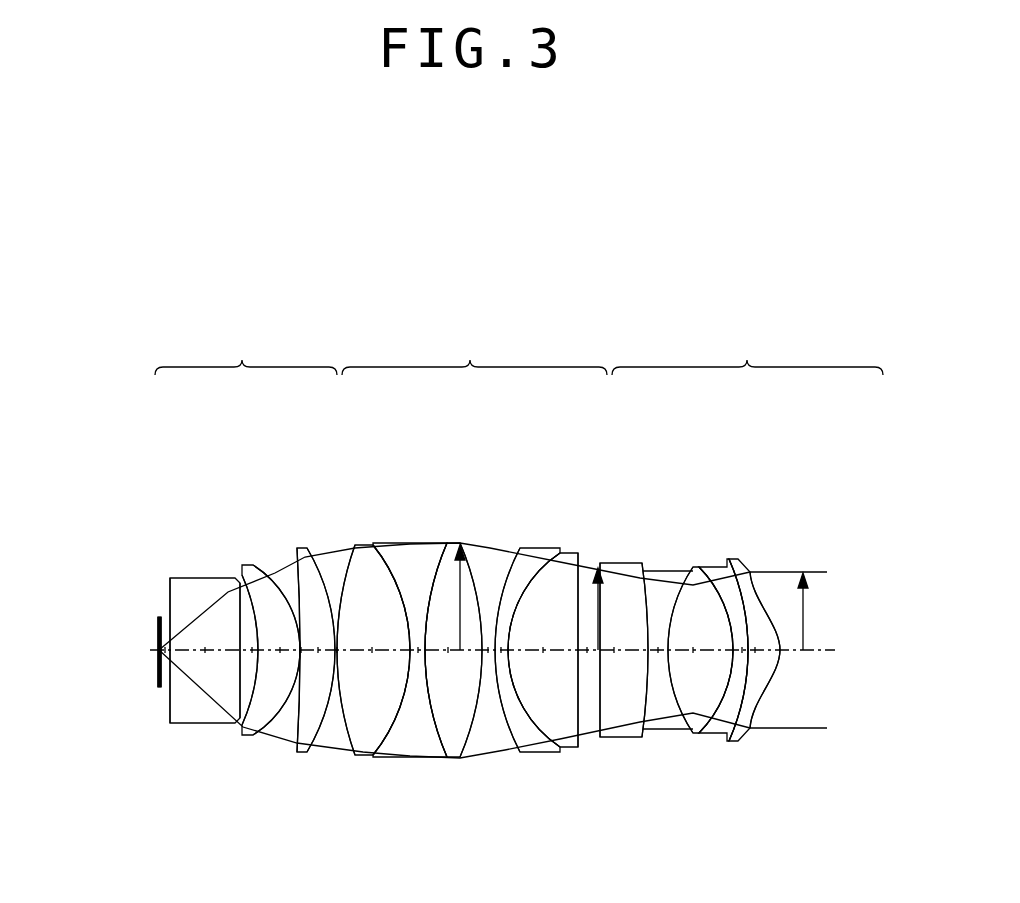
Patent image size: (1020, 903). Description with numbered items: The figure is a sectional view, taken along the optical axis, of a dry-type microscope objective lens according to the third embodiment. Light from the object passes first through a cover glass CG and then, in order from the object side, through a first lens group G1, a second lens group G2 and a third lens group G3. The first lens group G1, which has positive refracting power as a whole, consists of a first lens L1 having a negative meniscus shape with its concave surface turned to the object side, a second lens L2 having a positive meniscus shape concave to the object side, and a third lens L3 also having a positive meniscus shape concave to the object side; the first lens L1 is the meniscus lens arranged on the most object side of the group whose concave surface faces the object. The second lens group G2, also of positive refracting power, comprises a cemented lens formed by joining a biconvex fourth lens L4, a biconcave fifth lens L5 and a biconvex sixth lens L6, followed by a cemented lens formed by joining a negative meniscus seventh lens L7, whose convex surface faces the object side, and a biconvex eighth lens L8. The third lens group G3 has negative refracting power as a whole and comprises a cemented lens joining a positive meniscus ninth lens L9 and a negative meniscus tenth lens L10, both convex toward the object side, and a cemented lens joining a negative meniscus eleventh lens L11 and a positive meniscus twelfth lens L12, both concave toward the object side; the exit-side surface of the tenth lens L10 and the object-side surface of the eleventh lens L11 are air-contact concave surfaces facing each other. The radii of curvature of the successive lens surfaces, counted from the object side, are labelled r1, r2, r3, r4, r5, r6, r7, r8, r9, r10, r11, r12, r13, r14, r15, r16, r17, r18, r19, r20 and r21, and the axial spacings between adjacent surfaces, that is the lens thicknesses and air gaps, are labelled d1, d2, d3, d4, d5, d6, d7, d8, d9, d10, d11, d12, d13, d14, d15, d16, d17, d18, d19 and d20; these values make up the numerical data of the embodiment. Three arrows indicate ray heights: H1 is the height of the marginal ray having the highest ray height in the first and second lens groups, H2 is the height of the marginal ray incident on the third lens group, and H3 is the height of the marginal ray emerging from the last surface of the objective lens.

The cover glass CG is at (157, 630).
The first lens L1 is at (195, 590).
The second lens L2 is at (250, 565).
The third lens L3 is at (303, 548).
The fourth lens L4 is at (370, 545).
The fifth lens L5 is at (413, 543).
The sixth lens L6 is at (453, 543).
The seventh lens L7 is at (537, 548).
The eighth lens L8 is at (577, 553).
The ninth lens L9 is at (622, 563).
The tenth lens L10 is at (670, 570).
The eleventh lens L11 is at (723, 567).
The twelfth lens L12 is at (740, 560).
The first lens group G1 is at (246, 352).
The second lens group G2 is at (474, 352).
The third lens group G3 is at (747, 352).
The marginal ray height in first and second lens groups H1 is at (470, 582).
The marginal ray height incident on third lens group H2 is at (616, 609).
The marginal ray height at last surface H3 is at (822, 611).
The radius of curvature of lens surface r1 is at (158, 615).
The radius of curvature of lens surface r2 is at (160, 615).
The radius of curvature of lens surface r3 is at (171, 650).
The radius of curvature of lens surface r4 is at (240, 630).
The radius of curvature of lens surface r5 is at (258, 650).
The radius of curvature of lens surface r6 is at (300, 650).
The radius of curvature of lens surface r7 is at (300, 650).
The radius of curvature of lens surface r8 is at (335, 650).
The radius of curvature of lens surface r9 is at (338, 650).
The radius of curvature of lens surface r10 is at (410, 650).
The radius of curvature of lens surface r11 is at (425, 650).
The radius of curvature of lens surface r12 is at (482, 650).
The radius of curvature of lens surface r13 is at (495, 650).
The radius of curvature of lens surface r14 is at (508, 650).
The radius of curvature of lens surface r15 is at (589, 575).
The radius of curvature of lens surface r16 is at (594, 568).
The radius of curvature of lens surface r17 is at (657, 570).
The radius of curvature of lens surface r18 is at (698, 567).
The radius of curvature of lens surface r19 is at (716, 567).
The radius of curvature of lens surface r20 is at (733, 560).
The radius of curvature of lens surface r21 is at (762, 573).
The spacing between lens surfaces d1 is at (160, 652).
The spacing between lens surfaces d2 is at (163, 652).
The spacing between lens surfaces d3 is at (203, 652).
The spacing between lens surfaces d4 is at (253, 652).
The spacing between lens surfaces d5 is at (281, 652).
The spacing between lens surfaces d6 is at (302, 652).
The spacing between lens surfaces d7 is at (319, 652).
The spacing between lens surfaces d8 is at (337, 652).
The spacing between lens surfaces d9 is at (370, 652).
The spacing between lens surfaces d10 is at (418, 652).
The spacing between lens surfaces d11 is at (448, 652).
The spacing between lens surfaces d12 is at (488, 652).
The spacing between lens surfaces d13 is at (501, 652).
The spacing between lens surfaces d14 is at (543, 652).
The spacing between lens surfaces d15 is at (586, 652).
The spacing between lens surfaces d16 is at (613, 653).
The spacing between lens surfaces d17 is at (658, 652).
The spacing between lens surfaces d18 is at (693, 652).
The spacing between lens surfaces d19 is at (743, 653).
The spacing between lens surfaces d20 is at (755, 653).